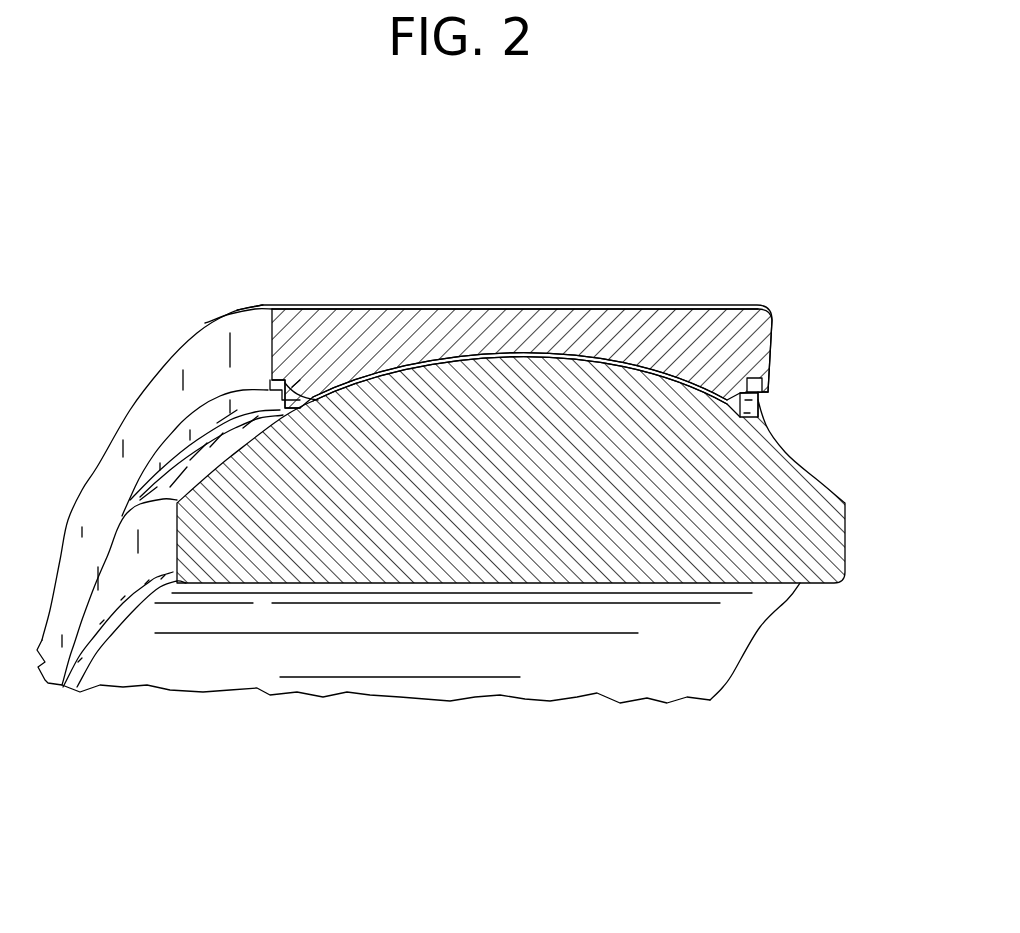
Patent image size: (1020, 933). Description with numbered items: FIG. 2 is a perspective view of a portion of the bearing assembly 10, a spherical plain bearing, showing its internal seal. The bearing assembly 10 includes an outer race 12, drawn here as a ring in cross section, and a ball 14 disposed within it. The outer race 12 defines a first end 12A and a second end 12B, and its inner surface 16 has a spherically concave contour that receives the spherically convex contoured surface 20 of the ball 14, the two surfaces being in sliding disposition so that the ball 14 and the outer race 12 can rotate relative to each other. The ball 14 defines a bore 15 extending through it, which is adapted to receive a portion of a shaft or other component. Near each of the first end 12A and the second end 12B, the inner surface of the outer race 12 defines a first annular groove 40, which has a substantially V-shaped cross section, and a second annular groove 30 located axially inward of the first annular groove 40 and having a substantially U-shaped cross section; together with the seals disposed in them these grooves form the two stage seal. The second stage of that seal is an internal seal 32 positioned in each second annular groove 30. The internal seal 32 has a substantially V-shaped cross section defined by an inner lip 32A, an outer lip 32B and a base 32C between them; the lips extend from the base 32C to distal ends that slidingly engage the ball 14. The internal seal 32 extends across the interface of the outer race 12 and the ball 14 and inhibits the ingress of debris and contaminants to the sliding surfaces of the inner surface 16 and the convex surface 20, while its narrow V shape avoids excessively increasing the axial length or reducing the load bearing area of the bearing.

The bearing assembly 10 is at (158, 728).
The outer race 12 is at (468, 306).
The first end 12A is at (258, 340).
The second end 12B is at (778, 307).
The ball 14 is at (818, 527).
The bore 15 is at (773, 665).
The inner surface 16 is at (556, 352).
The spherically convex contoured surface 20 is at (203, 480).
The second annular groove 30 is at (303, 390).
The internal seal 32 is at (318, 402).
The inner lip 32A is at (318, 392).
The outer lip 32B is at (280, 403).
The base 32C is at (315, 392).
The first annular groove 40 is at (270, 383).